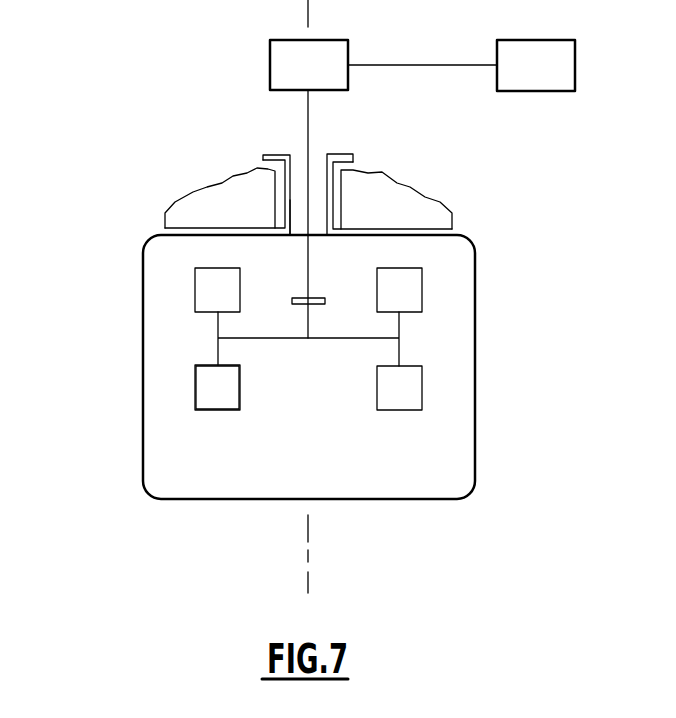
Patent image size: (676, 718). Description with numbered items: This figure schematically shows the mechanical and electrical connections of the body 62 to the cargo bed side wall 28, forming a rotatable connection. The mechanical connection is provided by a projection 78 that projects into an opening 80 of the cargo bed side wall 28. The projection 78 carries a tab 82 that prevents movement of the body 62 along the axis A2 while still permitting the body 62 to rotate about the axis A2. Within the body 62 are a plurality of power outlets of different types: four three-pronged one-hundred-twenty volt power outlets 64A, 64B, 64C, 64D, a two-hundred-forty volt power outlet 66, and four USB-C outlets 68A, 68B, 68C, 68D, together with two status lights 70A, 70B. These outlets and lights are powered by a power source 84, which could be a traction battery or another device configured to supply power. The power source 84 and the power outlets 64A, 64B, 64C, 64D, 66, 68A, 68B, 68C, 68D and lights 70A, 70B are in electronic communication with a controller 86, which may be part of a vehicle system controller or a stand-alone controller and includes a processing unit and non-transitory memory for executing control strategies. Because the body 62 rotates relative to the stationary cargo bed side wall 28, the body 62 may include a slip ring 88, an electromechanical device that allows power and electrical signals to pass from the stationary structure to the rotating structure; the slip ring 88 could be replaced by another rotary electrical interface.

The cargo bed side wall 28 is at (392, 200).
The body 62 is at (473, 243).
The 120 Volt power outlet 64A is at (136, 290).
The 120 Volt power outlet 64B is at (205, 290).
The 120 Volt power outlet 64C is at (467, 290).
The 120 Volt power outlet 64D is at (410, 290).
The 240 Volt power outlet 66 is at (410, 392).
The USB-C outlet 68A is at (131, 387).
The USB-C outlet 68B is at (131, 387).
The USB-C outlet 68C is at (131, 387).
The USB-C outlet 68D is at (205, 392).
The status light 70A is at (133, 422).
The status light 70B is at (212, 402).
The projection 78 is at (291, 218).
The opening 80 is at (284, 201).
The tab 82 is at (273, 154).
The power source 84 is at (552, 79).
The controller 86 is at (323, 78).
The slip ring 88 is at (316, 298).
The axis A2 is at (308, 578).